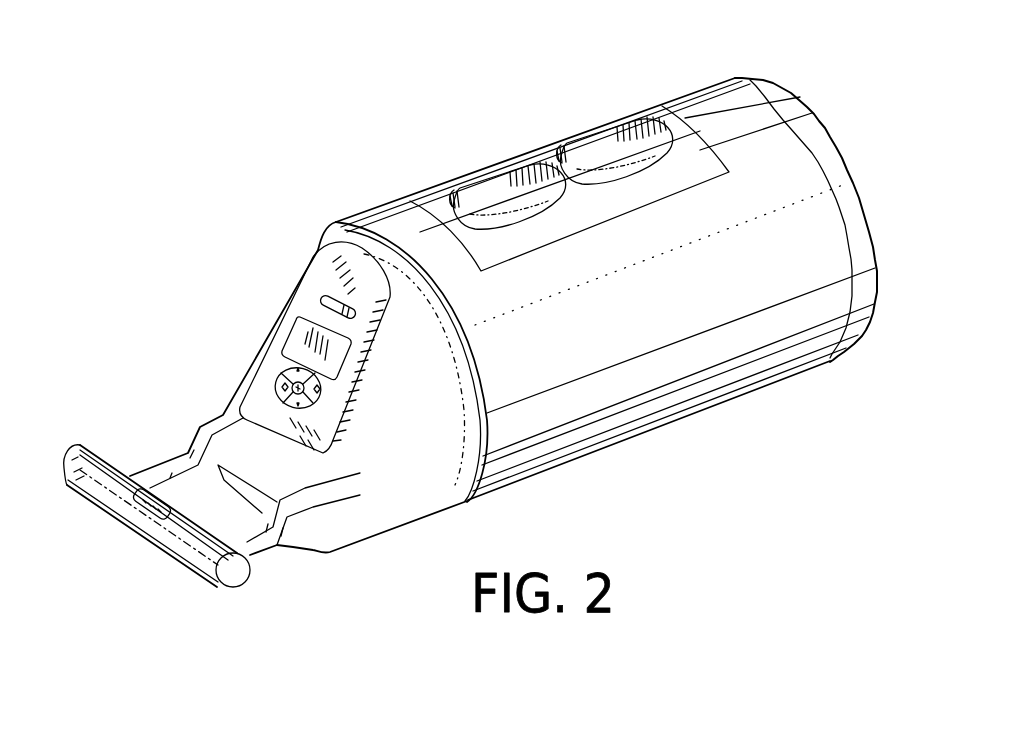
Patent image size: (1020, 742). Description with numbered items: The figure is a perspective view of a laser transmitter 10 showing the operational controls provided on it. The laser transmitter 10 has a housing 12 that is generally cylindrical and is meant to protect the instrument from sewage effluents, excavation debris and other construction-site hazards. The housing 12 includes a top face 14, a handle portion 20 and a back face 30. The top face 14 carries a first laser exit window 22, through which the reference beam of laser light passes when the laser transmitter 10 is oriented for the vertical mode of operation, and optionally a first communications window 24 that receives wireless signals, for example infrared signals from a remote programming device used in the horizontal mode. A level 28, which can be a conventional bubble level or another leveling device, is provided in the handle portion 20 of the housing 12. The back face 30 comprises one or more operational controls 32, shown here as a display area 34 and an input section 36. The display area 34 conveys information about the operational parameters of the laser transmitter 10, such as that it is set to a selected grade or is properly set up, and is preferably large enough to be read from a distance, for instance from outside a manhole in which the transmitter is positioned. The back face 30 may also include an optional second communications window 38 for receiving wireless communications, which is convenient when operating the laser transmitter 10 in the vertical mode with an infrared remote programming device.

The laser transmitter 10 is at (676, 492).
The housing 12 is at (722, 404).
The top face 14 is at (375, 120).
The handle portion 20 is at (97, 467).
The first laser exit window 22 is at (592, 138).
The first communications window 24 is at (480, 188).
The level 28 is at (150, 513).
The back face 30 is at (337, 280).
The operational controls 32 is at (224, 250).
The display area 34 is at (300, 343).
The input section 36 is at (273, 383).
The second communications window 38 is at (322, 300).